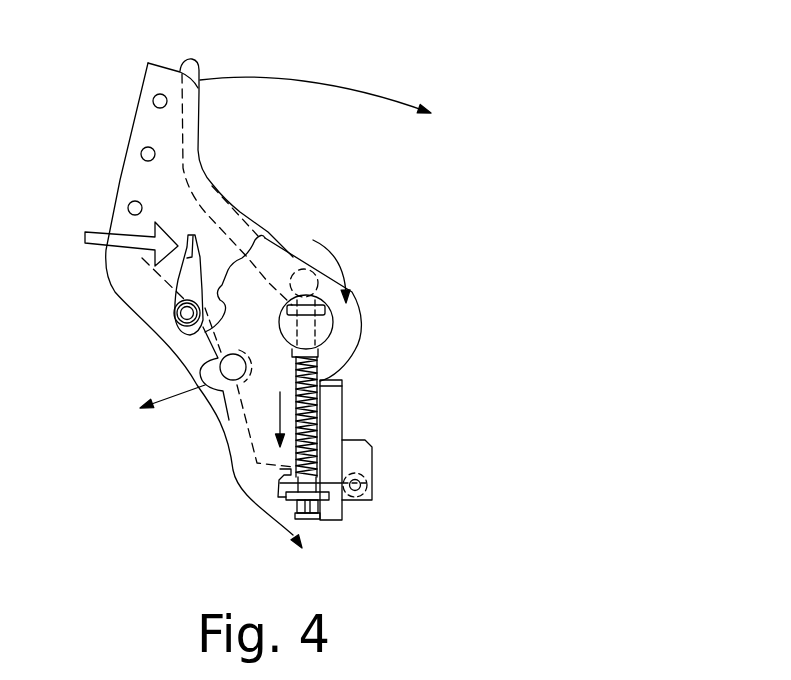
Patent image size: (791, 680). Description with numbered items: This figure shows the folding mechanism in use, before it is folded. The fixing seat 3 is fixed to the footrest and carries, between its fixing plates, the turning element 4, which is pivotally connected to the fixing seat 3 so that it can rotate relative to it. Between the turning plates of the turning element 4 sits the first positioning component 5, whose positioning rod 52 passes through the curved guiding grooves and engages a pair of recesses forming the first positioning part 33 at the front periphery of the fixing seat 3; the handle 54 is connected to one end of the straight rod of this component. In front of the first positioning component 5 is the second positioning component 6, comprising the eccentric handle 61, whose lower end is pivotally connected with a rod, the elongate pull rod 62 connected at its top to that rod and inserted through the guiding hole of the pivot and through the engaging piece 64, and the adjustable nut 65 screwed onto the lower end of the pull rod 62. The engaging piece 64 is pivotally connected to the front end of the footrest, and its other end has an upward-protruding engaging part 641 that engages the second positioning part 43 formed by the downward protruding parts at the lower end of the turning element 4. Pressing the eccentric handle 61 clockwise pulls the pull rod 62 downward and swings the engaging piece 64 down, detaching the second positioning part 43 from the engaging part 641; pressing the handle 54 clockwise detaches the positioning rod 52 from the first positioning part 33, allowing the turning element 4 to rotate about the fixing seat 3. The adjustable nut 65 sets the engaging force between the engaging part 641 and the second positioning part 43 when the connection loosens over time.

The fixing seat 3 is at (350, 314).
The turning element 4 is at (112, 154).
The first positioning component 5 is at (160, 321).
The second positioning component 6 is at (332, 397).
The first positioning part 33 is at (228, 418).
The second positioning part 43 is at (283, 477).
The positioning rod 52 is at (218, 362).
The handle 54 is at (178, 278).
The eccentric handle 61 is at (190, 60).
The pull rod 62 is at (358, 340).
The engaging piece 64 is at (338, 497).
The adjustable nut 65 is at (315, 515).
The engaging part 641 is at (275, 488).